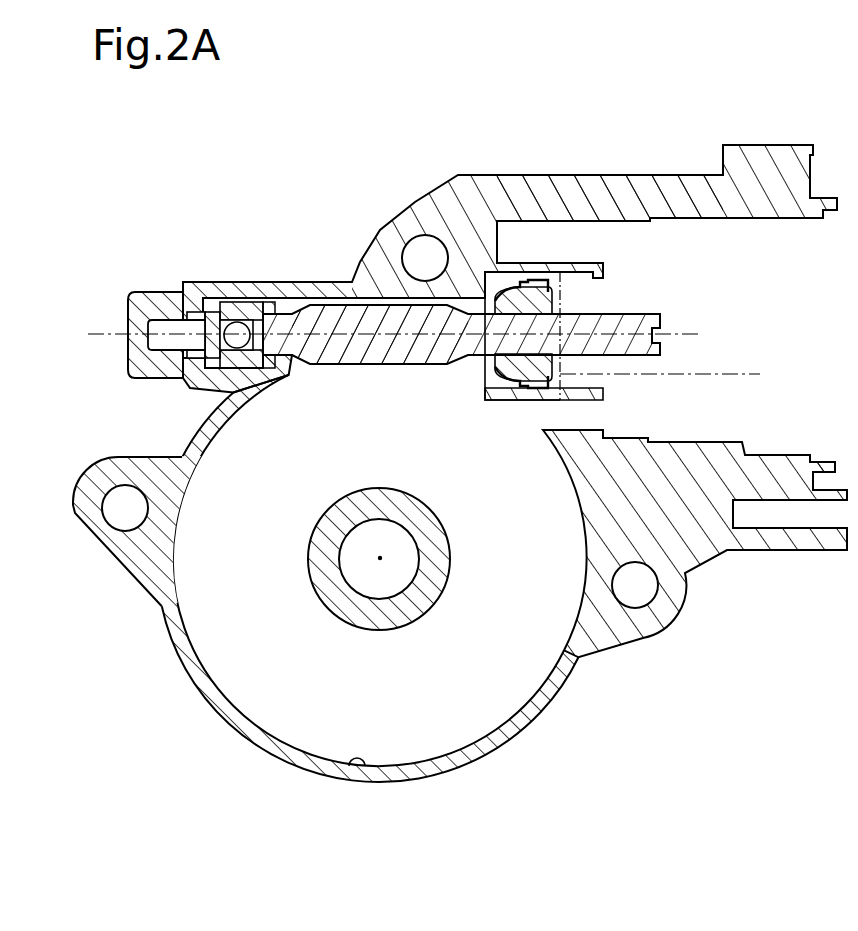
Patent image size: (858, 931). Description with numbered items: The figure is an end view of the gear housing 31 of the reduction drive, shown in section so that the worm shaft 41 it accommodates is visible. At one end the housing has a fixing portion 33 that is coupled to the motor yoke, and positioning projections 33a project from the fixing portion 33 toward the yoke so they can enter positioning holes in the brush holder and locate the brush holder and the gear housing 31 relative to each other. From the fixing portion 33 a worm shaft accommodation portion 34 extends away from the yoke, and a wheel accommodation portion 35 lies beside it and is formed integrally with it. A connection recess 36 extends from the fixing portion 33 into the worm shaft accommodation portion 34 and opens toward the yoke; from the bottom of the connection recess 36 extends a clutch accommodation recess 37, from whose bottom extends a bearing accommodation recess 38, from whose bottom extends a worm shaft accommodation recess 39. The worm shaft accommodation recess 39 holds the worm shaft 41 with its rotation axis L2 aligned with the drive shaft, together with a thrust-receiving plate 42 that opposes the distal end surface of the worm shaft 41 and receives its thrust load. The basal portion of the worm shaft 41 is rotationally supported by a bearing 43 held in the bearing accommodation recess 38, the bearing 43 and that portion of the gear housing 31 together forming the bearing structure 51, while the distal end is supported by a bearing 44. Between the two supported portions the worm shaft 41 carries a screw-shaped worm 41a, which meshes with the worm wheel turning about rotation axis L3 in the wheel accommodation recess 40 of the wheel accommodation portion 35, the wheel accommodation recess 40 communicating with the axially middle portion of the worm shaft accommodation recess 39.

The gear housing 31 is at (487, 764).
The fixing portion 33 is at (760, 147).
The positioning projections 33a is at (826, 213).
The worm shaft accommodation portion 34 is at (337, 282).
The wheel accommodation portion 35 is at (278, 760).
The connection recess 36 is at (678, 216).
The clutch accommodation recess 37 is at (585, 268).
The bearing accommodation recess 38 is at (540, 392).
The worm shaft accommodation recess 39 is at (288, 297).
The wheel accommodation recess 40 is at (357, 773).
The worm shaft 41 is at (633, 314).
The worm 41a is at (354, 366).
The thrust-receiving plate 42 is at (186, 290).
The bearing 43 is at (493, 400).
The bearing 44 is at (238, 300).
The bearing structure 51 is at (483, 369).
The rotation axis of the worm shaft L2 is at (673, 338).
The rotation axis of the worm wheel L3 is at (380, 560).